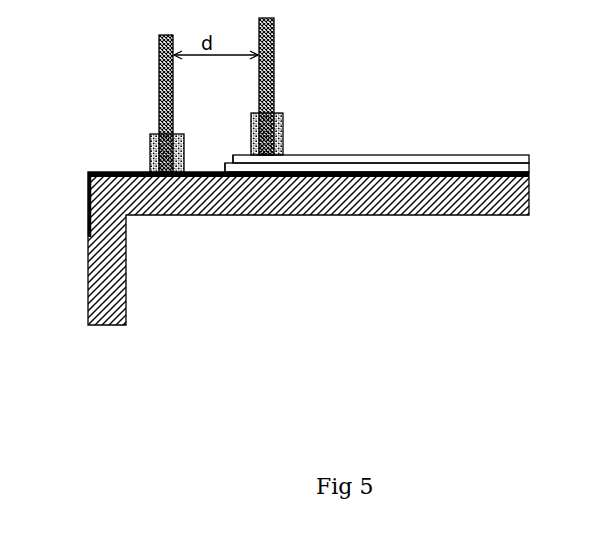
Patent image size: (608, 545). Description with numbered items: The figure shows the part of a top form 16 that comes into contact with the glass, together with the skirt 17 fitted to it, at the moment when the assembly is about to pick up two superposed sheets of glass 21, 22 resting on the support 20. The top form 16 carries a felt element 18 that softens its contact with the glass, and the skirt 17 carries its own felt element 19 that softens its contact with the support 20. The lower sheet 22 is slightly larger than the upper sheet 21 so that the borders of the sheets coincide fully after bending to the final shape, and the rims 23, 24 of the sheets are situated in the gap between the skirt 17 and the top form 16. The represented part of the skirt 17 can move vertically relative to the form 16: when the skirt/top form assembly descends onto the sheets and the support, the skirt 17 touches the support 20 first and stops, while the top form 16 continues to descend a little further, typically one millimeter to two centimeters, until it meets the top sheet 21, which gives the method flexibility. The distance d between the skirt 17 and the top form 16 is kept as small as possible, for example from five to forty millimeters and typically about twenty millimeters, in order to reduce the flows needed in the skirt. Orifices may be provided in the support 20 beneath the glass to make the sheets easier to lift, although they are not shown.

The top form 16 is at (275, 67).
The skirt 17 is at (158, 74).
The felt element 18 is at (285, 133).
The felt element 19 is at (150, 143).
The support 20 is at (112, 172).
The sheet of glass 21 is at (468, 150).
The sheet of glass 22 is at (379, 165).
The rim 23 is at (229, 160).
The rim 24 is at (223, 172).